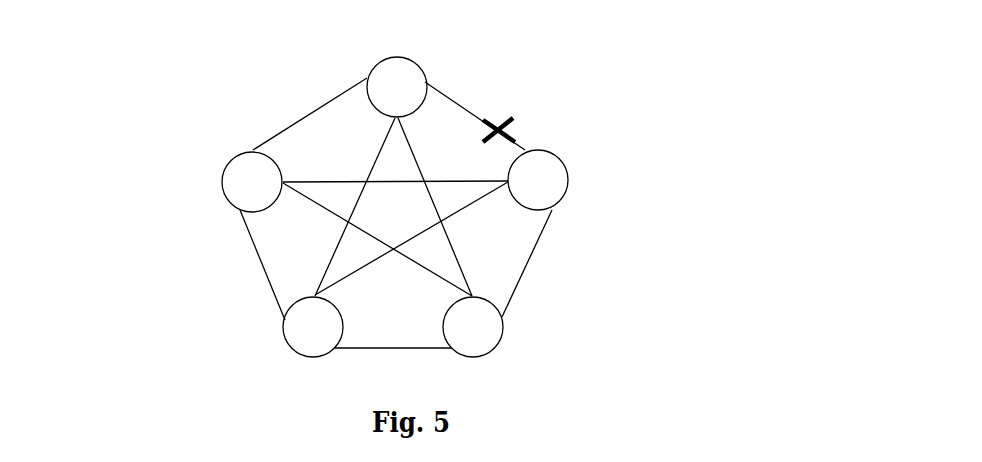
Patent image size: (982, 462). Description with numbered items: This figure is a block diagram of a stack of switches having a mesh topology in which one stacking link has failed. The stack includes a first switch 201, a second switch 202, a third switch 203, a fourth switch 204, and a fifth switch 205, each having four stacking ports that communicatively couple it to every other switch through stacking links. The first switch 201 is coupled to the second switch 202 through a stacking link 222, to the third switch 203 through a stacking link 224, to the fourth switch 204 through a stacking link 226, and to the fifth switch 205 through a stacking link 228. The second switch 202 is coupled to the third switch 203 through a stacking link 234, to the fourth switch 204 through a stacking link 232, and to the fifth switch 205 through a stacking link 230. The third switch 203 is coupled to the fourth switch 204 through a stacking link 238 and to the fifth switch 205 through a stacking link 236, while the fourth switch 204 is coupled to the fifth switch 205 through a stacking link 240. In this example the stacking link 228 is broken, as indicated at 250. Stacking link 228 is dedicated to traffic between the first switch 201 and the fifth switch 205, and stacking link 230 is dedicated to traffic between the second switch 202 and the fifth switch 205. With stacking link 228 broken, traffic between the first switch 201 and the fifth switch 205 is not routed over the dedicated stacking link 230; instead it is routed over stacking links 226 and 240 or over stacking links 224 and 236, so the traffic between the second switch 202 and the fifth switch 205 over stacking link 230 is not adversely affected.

The first switch 201 is at (395, 57).
The second switch 202 is at (222, 183).
The third switch 203 is at (288, 343).
The fourth switch 204 is at (493, 348).
The fifth switch 205 is at (568, 180).
The stacking link 222 is at (290, 125).
The stacking link 224 is at (385, 145).
The stacking link 226 is at (410, 149).
The stacking link 228 is at (456, 100).
The stacking link 230 is at (298, 181).
The stacking link 232 is at (300, 197).
The stacking link 234 is at (254, 255).
The stacking link 236 is at (358, 273).
The stacking link 238 is at (395, 350).
The stacking link 240 is at (529, 262).
The broken stacking link indication 250 is at (513, 121).